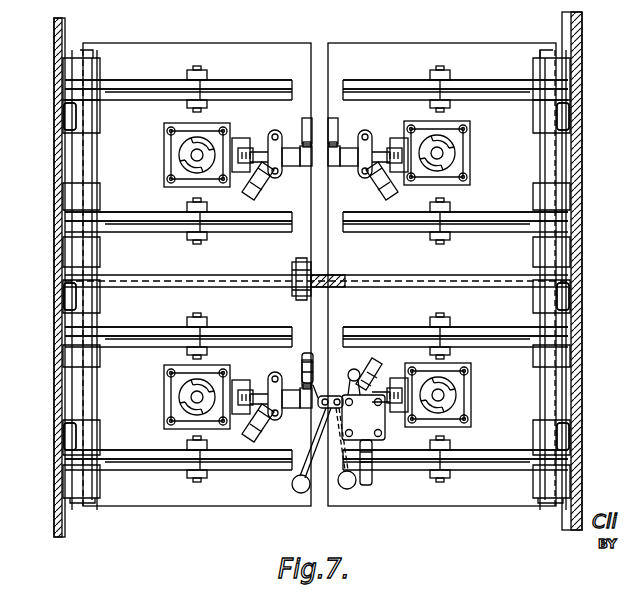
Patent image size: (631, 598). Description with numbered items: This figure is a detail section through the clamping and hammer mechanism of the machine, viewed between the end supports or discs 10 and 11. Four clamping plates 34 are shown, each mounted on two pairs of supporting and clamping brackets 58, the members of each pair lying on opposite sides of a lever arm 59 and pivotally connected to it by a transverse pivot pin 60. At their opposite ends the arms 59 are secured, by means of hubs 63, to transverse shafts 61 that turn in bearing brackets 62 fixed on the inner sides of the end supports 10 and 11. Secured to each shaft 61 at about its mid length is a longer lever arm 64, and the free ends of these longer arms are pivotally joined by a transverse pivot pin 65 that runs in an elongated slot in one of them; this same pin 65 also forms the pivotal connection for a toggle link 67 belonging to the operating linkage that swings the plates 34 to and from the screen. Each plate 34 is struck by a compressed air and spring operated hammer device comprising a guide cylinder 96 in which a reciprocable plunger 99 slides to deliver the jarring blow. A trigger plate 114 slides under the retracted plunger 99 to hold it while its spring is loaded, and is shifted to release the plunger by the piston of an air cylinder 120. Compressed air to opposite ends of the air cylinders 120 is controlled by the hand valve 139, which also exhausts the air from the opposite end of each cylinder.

The end support 10 is at (50, 188).
The end support 11 is at (587, 170).
The clamping plate 34 is at (242, 43).
The supporting and clamping bracket 58 is at (252, 90).
The lever arm 59 is at (160, 95).
The transverse pivot pin 60 is at (201, 70).
The transverse shaft 61 is at (93, 360).
The bearing bracket 62 is at (97, 126).
The hub 63 is at (66, 78).
The longer lever arm 64 is at (255, 288).
The transverse pivot pin 65 is at (297, 300).
The toggle link 67 is at (346, 281).
The guide cylinder 96 is at (185, 151).
The plunger 99 is at (185, 160).
The trigger plate 114 is at (243, 138).
The air cylinder 120 is at (282, 125).
The hand valve 139 is at (338, 423).